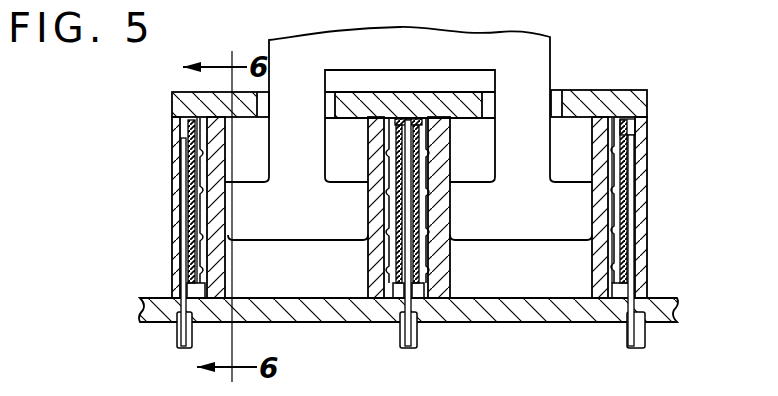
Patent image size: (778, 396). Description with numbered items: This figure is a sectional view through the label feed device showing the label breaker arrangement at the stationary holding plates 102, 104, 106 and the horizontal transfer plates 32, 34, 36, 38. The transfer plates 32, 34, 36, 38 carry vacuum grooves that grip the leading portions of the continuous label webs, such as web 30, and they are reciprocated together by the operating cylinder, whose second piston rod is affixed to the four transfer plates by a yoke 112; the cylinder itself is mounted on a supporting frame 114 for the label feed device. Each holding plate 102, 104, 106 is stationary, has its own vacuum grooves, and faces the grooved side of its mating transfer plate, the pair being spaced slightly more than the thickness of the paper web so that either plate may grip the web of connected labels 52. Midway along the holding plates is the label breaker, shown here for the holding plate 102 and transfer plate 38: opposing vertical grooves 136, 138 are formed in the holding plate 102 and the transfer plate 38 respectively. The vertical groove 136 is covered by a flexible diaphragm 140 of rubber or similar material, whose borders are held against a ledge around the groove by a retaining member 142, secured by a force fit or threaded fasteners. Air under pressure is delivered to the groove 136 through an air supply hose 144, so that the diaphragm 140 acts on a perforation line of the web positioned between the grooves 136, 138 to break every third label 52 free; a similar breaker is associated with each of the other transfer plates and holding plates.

The web 30 is at (200, 193).
The horizontal transfer plate 32 is at (593, 143).
The horizontal transfer plate 34 is at (448, 147).
The horizontal transfer plate 36 is at (372, 152).
The horizontal transfer plate 38 is at (219, 150).
The label 52 is at (203, 213).
The holding plate 102 is at (185, 126).
The holding plate 104 is at (406, 122).
The holding plate 106 is at (646, 120).
The yoke 112 is at (545, 46).
The supporting frame 114 is at (604, 90).
The vertical groove 136 is at (185, 252).
The vertical groove 138 is at (203, 163).
The flexible diaphragm 140 is at (189, 217).
The retaining member 142 is at (200, 282).
The air supply hose 144 is at (180, 338).